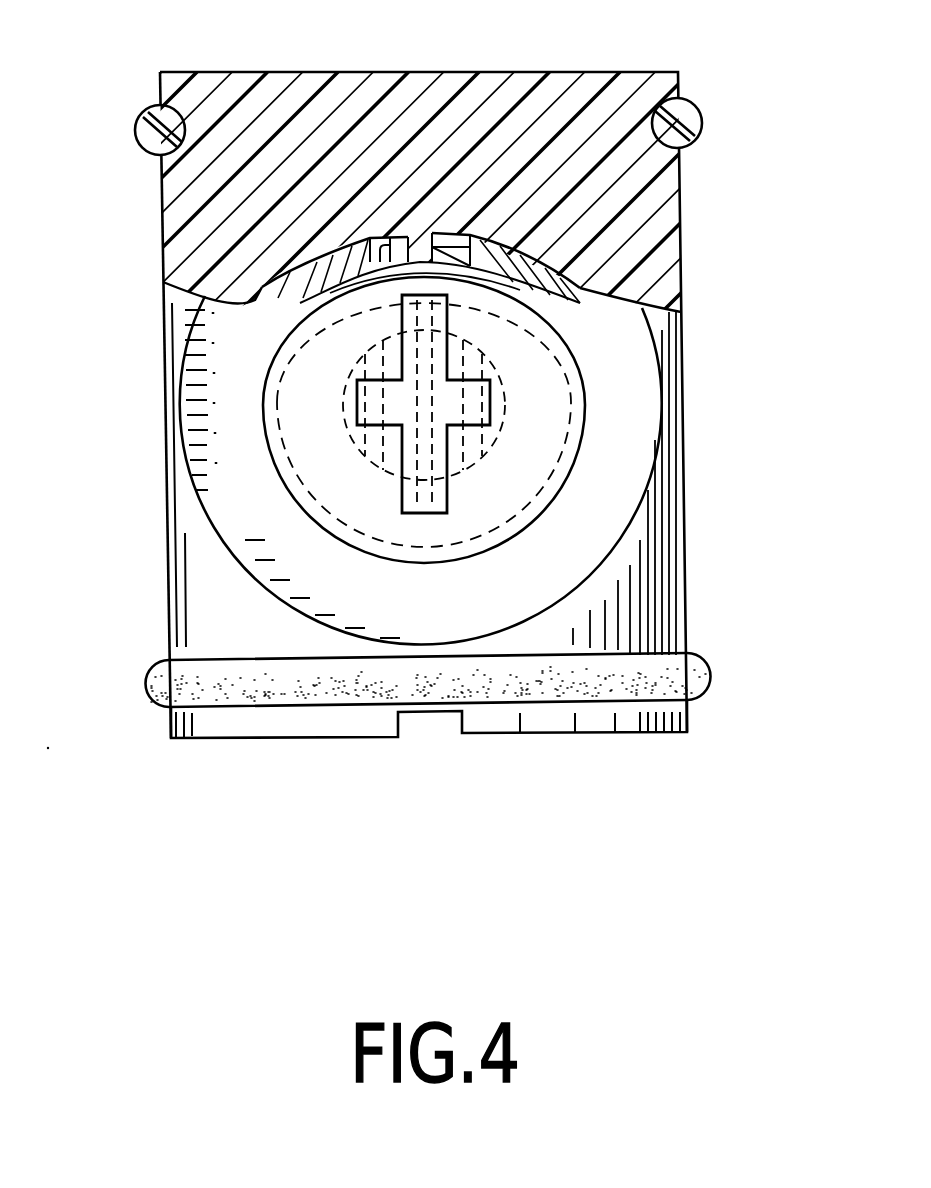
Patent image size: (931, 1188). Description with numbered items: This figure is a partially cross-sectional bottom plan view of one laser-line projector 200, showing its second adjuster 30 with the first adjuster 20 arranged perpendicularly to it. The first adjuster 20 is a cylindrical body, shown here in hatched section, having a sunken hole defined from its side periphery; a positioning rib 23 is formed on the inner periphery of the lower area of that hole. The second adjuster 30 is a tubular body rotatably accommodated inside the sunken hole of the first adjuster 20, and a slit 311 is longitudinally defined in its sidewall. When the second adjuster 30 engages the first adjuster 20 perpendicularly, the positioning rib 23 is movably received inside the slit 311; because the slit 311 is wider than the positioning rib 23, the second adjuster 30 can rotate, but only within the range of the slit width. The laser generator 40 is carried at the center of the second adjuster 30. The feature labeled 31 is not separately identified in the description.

The laser-line projector 200 is at (697, 432).
The first adjuster 20 is at (553, 721).
The positioning rib 23 is at (620, 288).
The second adjuster 30 is at (553, 487).
The engaging ring 31 is at (325, 151).
The slit 311 is at (390, 232).
The laser generator 40 is at (350, 442).